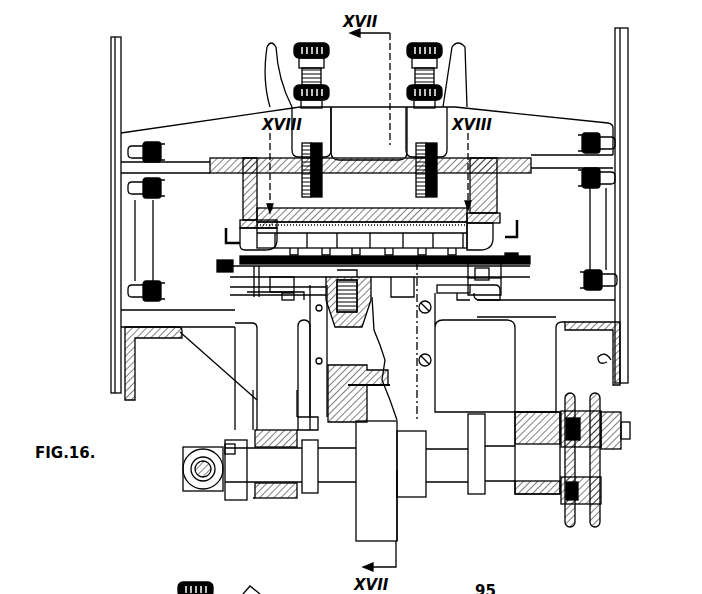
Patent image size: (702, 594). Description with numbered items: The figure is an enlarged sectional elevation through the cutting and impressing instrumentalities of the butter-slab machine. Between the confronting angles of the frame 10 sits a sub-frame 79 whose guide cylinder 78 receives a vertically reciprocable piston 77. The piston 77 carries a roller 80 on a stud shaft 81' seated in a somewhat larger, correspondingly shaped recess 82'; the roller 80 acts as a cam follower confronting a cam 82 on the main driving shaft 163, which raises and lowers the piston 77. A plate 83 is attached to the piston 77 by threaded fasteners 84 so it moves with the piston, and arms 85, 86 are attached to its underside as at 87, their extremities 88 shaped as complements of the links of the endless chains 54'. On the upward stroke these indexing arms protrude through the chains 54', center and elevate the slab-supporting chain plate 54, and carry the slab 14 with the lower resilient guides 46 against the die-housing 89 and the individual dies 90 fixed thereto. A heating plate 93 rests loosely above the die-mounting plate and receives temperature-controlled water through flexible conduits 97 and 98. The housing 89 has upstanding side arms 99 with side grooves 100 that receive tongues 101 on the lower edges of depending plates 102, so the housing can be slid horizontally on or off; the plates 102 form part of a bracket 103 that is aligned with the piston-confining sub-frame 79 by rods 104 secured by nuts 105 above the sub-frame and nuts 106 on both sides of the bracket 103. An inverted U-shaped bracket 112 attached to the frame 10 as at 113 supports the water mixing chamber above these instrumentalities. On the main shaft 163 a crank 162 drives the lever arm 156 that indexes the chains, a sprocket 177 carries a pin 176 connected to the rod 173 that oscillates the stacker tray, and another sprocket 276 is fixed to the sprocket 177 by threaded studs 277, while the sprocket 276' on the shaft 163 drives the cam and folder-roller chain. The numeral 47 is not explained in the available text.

The frame 10 is at (104, 401).
The butter slab 14 is at (377, 300).
The lower resilient guides 46 is at (220, 262).
The stop 47 is at (221, 238).
The chain plate 54 is at (275, 307).
The chains 54' is at (513, 276).
The piston 77 is at (328, 376).
The guide cylinder 78 is at (423, 373).
The sub-frame 79 is at (220, 371).
The roller 80 is at (378, 411).
The shaft 81' is at (301, 444).
The cam 82 is at (410, 505).
The recess 82' is at (359, 380).
The plate 83 is at (440, 300).
The threaded fasteners 84 is at (374, 298).
The arm 85 is at (280, 298).
The arm 86 is at (481, 302).
The attachment point 87 is at (458, 301).
The extremities 88 is at (236, 324).
The die-housing 89 is at (500, 225).
The dies 90 is at (388, 240).
The heating plate 93 is at (362, 208).
The flexible conduit 97 is at (268, 62).
The flexible conduit 98 is at (470, 55).
The side arms 99 is at (243, 225).
The side grooves 100 is at (243, 214).
The tongues 101 is at (300, 165).
The depending plates 102 is at (292, 146).
The bracket 103 is at (372, 158).
The rods 104 is at (140, 250).
The nuts 105 is at (131, 297).
The nuts 106 is at (130, 152).
The bracket 112 is at (112, 100).
The attachment point 113 is at (116, 364).
The lever arm 156 is at (203, 458).
The crank 162 is at (203, 492).
The main driving shaft 163 is at (439, 474).
The rod 173 is at (610, 412).
The pin 176 is at (601, 452).
The sprocket 177 is at (601, 489).
The sprocket 276 is at (583, 477).
The sprocket 276' is at (503, 479).
The threaded studs 277 is at (561, 410).